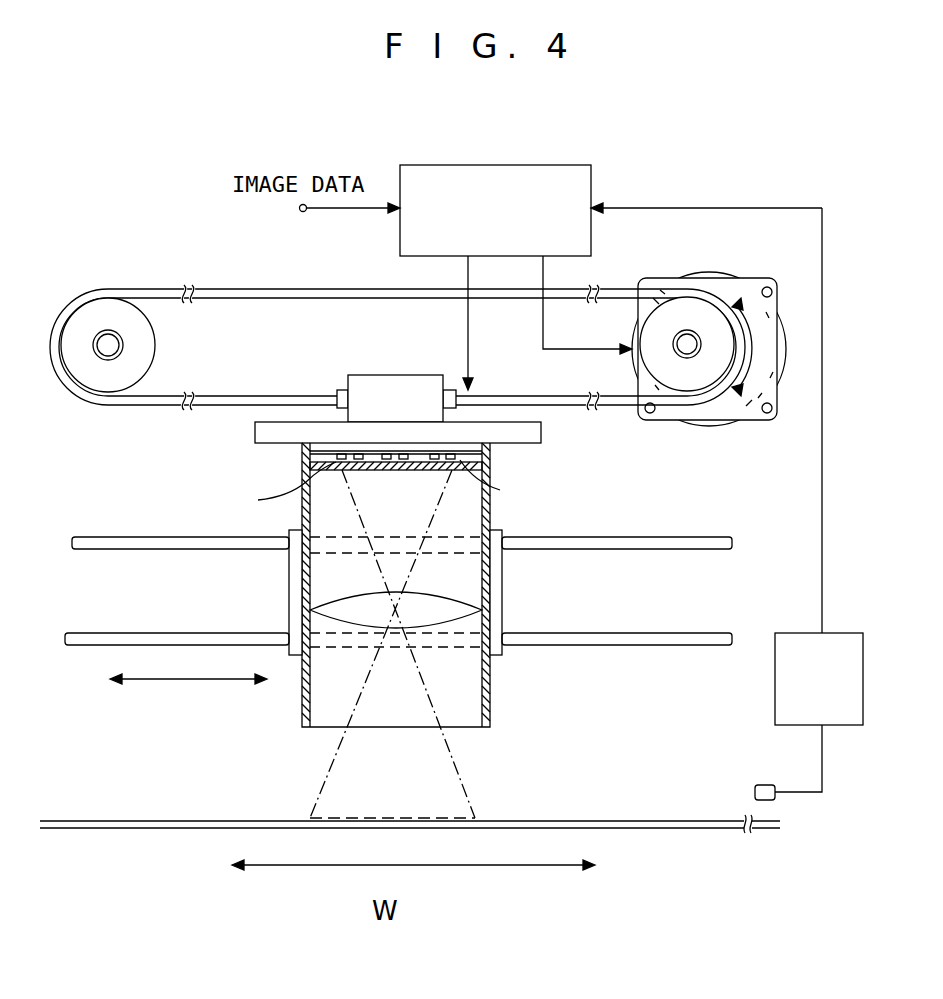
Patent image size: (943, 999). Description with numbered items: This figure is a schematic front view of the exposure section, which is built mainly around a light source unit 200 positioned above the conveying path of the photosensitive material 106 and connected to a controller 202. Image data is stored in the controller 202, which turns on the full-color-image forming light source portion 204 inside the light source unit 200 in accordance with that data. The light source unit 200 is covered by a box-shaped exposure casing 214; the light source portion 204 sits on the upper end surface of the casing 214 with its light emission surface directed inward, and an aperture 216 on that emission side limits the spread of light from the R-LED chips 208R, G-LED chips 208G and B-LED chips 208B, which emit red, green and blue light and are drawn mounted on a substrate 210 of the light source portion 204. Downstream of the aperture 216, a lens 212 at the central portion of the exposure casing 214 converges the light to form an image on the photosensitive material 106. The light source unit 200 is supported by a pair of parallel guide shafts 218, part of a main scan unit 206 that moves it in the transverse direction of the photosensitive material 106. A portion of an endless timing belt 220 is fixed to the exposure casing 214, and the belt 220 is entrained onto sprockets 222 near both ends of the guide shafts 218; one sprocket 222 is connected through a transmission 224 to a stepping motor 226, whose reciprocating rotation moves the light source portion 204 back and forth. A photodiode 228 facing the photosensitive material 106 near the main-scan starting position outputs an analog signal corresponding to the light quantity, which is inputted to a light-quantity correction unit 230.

The photosensitive material 106 is at (658, 820).
The light source unit 200 is at (418, 628).
The controller 202 is at (595, 183).
The full-color-image forming light source portion 204 is at (318, 455).
The main scan unit 206 is at (135, 410).
The R-LED chips 208R is at (356, 460).
The G-LED chips 208G is at (404, 460).
The B-LED chips 208B is at (435, 460).
The LED substrate 210 is at (475, 460).
The lens 212 is at (348, 617).
The exposure casing 214 is at (490, 687).
The aperture 216 is at (357, 489).
The guide shafts 218 is at (630, 550).
The timing belt 220 is at (288, 390).
The sprockets 222 is at (147, 345).
The transmission 224 is at (733, 418).
The stepping motor 226 is at (702, 428).
The photodiode 228 is at (775, 800).
The light-quantity correction unit 230 is at (800, 725).